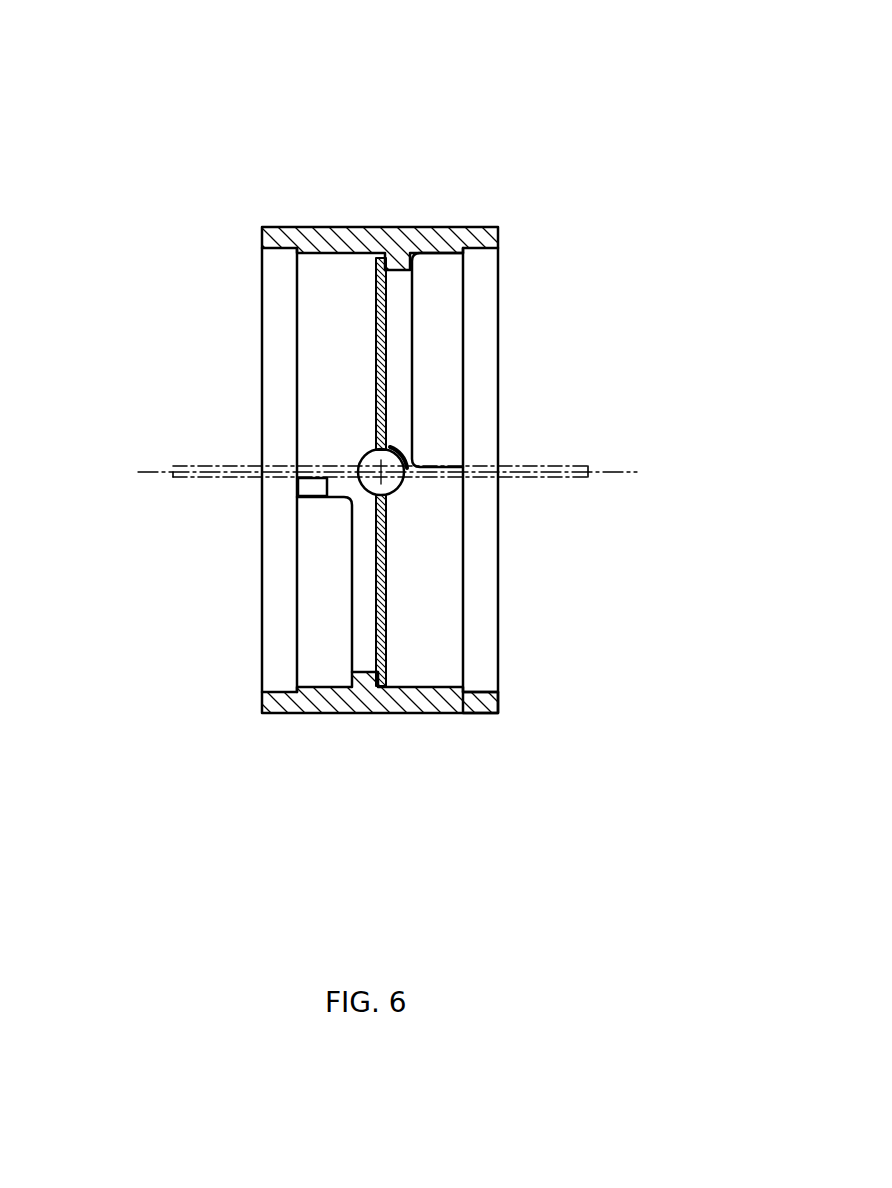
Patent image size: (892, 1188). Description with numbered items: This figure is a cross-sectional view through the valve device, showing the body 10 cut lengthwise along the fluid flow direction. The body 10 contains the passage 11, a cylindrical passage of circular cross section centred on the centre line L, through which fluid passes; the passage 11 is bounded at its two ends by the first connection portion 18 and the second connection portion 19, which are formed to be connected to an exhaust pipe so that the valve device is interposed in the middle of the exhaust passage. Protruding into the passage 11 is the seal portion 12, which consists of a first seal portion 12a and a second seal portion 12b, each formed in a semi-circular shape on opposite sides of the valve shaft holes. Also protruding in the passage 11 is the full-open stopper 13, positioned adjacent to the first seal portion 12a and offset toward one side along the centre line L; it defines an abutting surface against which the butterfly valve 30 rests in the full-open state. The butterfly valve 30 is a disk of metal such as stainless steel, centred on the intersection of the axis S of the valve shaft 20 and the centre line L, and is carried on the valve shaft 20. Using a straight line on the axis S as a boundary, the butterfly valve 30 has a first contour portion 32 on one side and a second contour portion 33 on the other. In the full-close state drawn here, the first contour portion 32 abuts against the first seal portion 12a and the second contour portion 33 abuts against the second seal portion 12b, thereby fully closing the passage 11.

The body 10 is at (373, 442).
The passage 11 is at (300, 686).
The seal portion 12 is at (373, 446).
The first seal portion 12a is at (353, 668).
The second seal portion 12b is at (410, 272).
The full-open stopper 13 is at (295, 487).
The first connection portion 18 is at (262, 703).
The second connection portion 19 is at (500, 695).
The valve shaft 20 is at (401, 450).
The butterfly valve 30 is at (374, 460).
The first contour portion 32 is at (388, 655).
The second contour portion 33 is at (375, 268).
The axis S is at (387, 478).
The centre line L is at (613, 473).